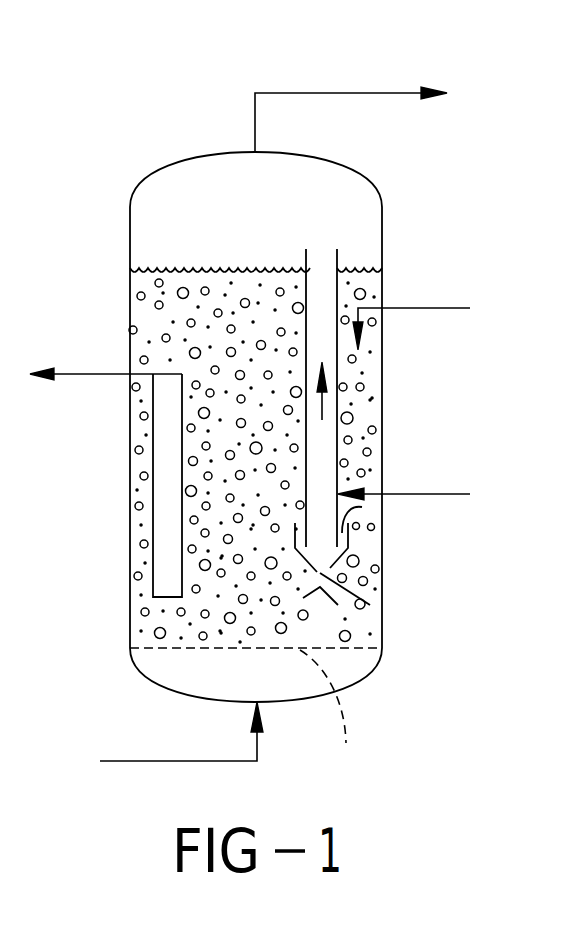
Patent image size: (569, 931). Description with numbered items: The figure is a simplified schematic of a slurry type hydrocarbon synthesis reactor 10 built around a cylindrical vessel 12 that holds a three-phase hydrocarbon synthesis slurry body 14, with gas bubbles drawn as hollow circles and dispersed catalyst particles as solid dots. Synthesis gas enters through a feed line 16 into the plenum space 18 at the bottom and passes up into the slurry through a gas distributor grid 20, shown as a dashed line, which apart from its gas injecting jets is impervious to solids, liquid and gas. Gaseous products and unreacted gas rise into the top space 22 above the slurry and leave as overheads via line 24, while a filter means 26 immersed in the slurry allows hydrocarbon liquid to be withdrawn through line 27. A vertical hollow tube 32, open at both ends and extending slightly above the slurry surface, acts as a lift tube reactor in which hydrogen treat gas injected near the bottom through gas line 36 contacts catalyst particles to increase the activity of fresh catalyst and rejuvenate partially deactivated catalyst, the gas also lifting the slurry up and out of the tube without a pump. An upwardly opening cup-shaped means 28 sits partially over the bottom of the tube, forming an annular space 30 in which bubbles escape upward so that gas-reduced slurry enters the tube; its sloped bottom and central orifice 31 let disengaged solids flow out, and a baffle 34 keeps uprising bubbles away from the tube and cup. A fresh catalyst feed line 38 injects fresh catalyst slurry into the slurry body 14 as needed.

The slurry type hydrocarbon synthesis reactor 10 is at (122, 126).
The cylindrical vessel 12 is at (386, 232).
The slurry body 14 is at (152, 317).
The feed line 16 is at (150, 761).
The plenum space 18 is at (236, 689).
The gas distributor grid 20 is at (332, 712).
The top space 22 is at (236, 214).
The overheads line 24 is at (345, 92).
The filter means 26 is at (153, 470).
The hydrocarbon liquid withdrawal line 27 is at (88, 375).
The gas bubble removing means 28 is at (350, 540).
The annular space 30 is at (362, 507).
The orifice 31 is at (370, 605).
The vertical hollow tube 32 is at (338, 448).
The baffle 34 is at (312, 595).
The gas line 36 is at (440, 494).
The fresh catalyst feed line 38 is at (438, 308).